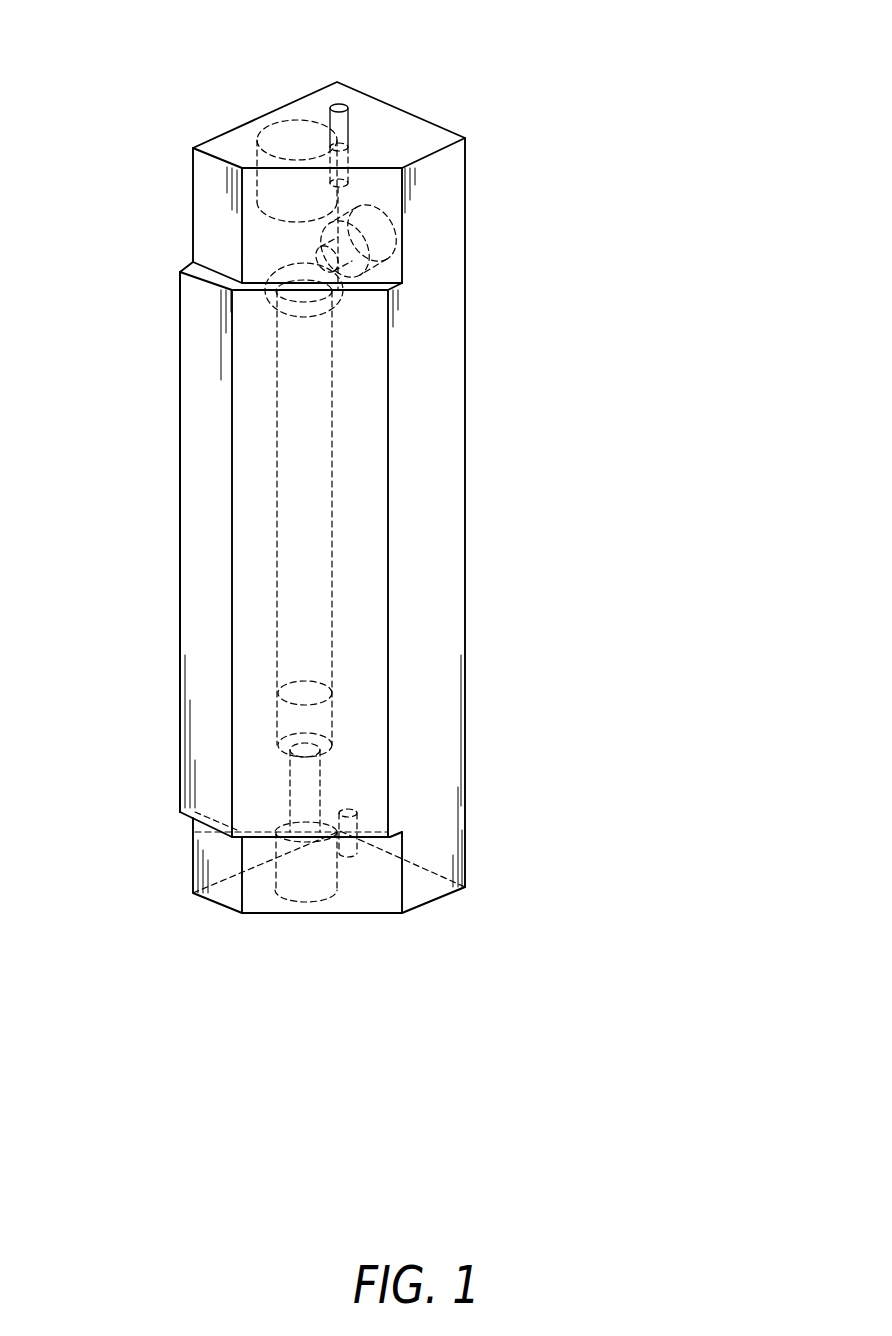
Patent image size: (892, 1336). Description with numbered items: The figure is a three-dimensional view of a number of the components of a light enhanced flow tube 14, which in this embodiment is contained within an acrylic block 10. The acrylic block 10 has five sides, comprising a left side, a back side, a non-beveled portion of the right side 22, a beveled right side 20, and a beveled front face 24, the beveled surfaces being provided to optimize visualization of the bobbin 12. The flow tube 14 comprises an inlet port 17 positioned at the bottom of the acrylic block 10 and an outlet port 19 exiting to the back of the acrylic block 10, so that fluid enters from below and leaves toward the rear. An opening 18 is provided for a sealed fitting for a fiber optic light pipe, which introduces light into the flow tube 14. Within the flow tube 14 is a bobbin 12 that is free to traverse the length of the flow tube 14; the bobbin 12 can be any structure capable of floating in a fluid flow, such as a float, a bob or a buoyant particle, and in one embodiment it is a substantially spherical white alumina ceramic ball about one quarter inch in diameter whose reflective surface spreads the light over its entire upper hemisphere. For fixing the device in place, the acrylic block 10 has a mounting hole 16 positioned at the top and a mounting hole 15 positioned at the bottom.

The acrylic block 10 is at (613, 77).
The bobbin 12 is at (290, 690).
The light enhanced flow tube 14 is at (355, 745).
The mounting hole 15 is at (348, 855).
The mounting hole 16 is at (340, 107).
The inlet port 17 is at (287, 895).
The opening 18 is at (267, 138).
The outlet port 19 is at (383, 225).
The beveled right side 20 is at (243, 435).
The non-beveled portion of the right side 22 is at (437, 808).
The beveled front face 24 is at (192, 317).